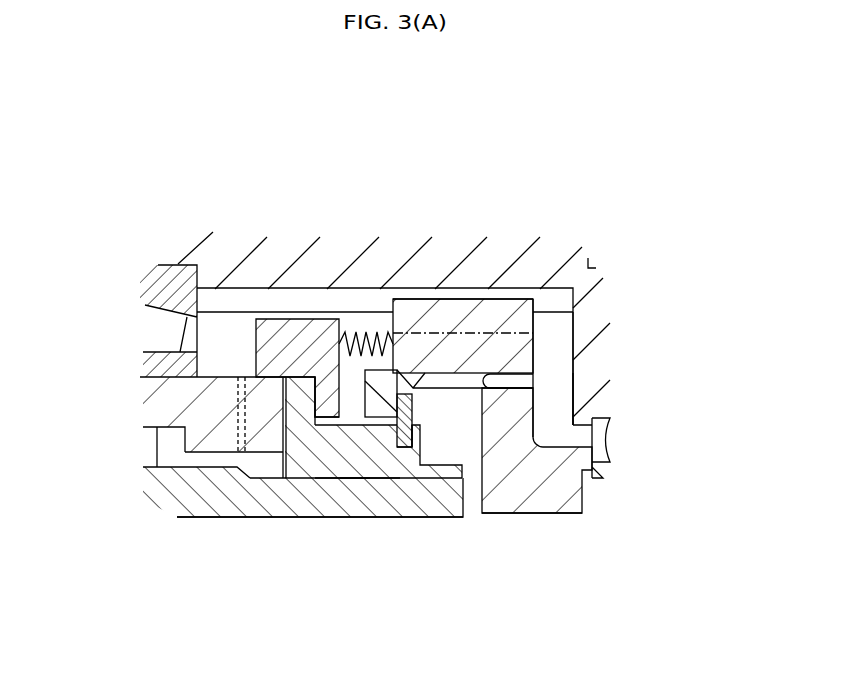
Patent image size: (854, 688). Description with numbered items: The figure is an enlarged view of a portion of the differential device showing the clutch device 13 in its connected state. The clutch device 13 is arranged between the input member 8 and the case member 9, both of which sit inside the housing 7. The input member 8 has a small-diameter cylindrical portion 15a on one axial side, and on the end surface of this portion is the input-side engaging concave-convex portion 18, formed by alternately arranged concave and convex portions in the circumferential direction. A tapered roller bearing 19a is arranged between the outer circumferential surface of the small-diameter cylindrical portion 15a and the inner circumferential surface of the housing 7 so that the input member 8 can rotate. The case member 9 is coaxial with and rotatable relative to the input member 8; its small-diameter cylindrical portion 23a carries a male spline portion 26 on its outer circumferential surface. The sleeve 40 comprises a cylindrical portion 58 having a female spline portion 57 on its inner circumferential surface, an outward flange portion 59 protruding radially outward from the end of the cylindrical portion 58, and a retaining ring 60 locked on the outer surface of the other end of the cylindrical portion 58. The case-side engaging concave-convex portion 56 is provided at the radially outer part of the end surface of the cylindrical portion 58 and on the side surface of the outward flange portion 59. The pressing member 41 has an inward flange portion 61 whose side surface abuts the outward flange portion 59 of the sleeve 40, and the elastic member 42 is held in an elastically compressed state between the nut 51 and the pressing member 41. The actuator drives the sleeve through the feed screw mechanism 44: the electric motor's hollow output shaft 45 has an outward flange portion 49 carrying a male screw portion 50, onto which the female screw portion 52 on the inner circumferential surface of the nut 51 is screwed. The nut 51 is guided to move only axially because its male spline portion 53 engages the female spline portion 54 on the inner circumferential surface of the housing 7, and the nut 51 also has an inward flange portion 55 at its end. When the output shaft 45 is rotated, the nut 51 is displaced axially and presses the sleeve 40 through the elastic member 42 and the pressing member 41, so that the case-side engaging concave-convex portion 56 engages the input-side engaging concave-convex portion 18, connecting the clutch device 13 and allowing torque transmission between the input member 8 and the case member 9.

The clutch device 13 is at (549, 239).
The housing 7 is at (596, 262).
The tapered roller bearing 19a is at (155, 333).
The small-diameter cylindrical portion 15a is at (163, 392).
The input member 8 is at (163, 410).
The input-side engaging concave-convex portion 18 is at (242, 452).
The case member 9 is at (180, 493).
The small-diameter cylindrical portion 23a is at (261, 507).
The male spline portion 26 is at (300, 478).
The case-side engaging concave-convex portion 56 is at (276, 355).
The pressing member 41 is at (300, 350).
The outward flange portion 59 is at (303, 385).
The inward flange portion 61 is at (322, 430).
The elastic member 42 is at (380, 370).
The male spline portion 53 is at (480, 330).
The female spline portion 54 is at (428, 298).
The feed screw mechanism 44 is at (555, 327).
The nut 51 is at (536, 350).
The inward flange portion 55 is at (385, 405).
The female screw portion 52 is at (522, 382).
The male screw portion 50 is at (497, 393).
The output shaft 45 is at (572, 498).
The outward flange portion 49 is at (612, 445).
The sleeve 40 is at (421, 440).
The retaining ring 60 is at (413, 432).
The female spline portion 57 is at (363, 477).
The cylindrical portion 58 is at (342, 470).